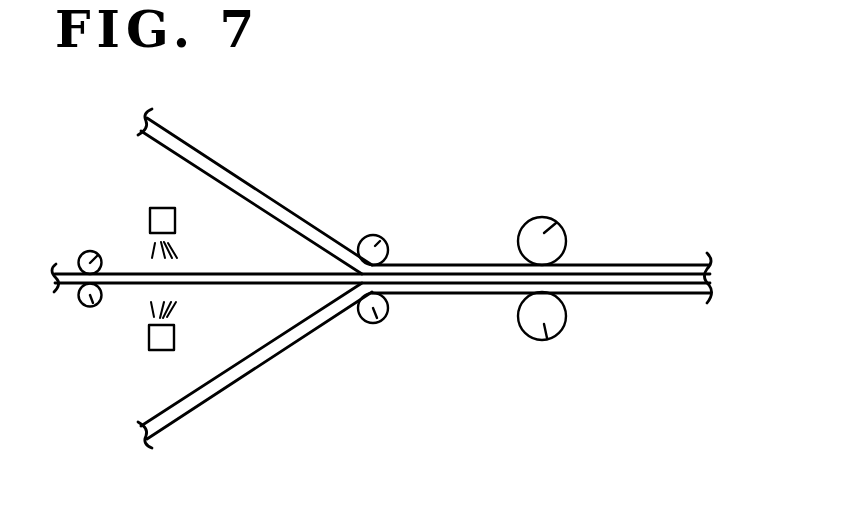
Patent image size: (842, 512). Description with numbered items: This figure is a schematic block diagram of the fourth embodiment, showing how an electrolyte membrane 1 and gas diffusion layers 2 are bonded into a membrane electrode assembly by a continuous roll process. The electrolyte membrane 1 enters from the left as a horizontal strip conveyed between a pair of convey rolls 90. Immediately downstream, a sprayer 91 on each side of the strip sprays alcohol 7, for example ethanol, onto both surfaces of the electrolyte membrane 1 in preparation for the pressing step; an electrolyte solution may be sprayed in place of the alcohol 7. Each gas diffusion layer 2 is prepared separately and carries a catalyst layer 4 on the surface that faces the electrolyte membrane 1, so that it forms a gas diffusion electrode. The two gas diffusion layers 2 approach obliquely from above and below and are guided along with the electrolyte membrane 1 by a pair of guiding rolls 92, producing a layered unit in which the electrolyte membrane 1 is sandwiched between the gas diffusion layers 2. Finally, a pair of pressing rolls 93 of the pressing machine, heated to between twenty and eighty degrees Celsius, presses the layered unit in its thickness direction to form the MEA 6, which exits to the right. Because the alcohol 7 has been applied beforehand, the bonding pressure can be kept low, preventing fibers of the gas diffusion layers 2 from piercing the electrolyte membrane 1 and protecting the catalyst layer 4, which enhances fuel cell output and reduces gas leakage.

The electrolyte membrane 1 is at (136, 291).
The gas diffusion layer 2 is at (182, 133).
The catalyst layer 4 is at (182, 155).
The MEA 6 is at (642, 252).
The alcohol 7 is at (175, 245).
The convey roll 90 is at (87, 252).
The sprayer 91 is at (170, 220).
The guiding rolls 92 is at (382, 240).
The pressing rolls 93 is at (556, 223).